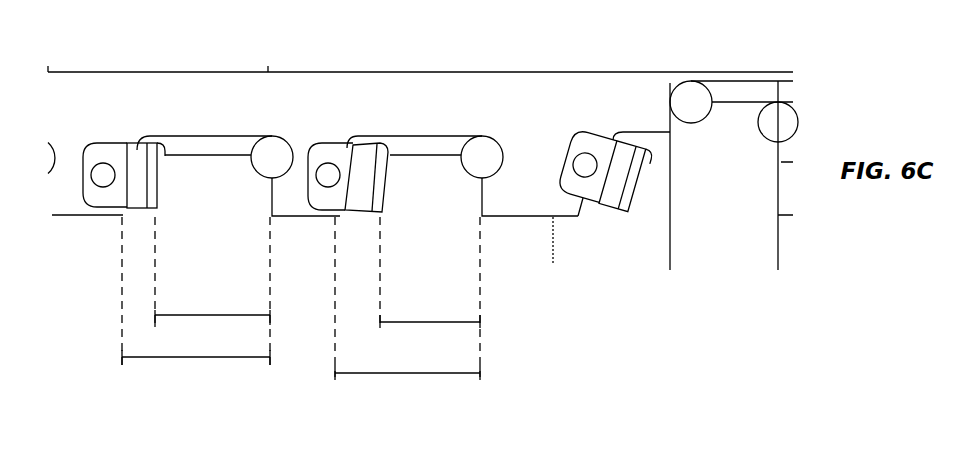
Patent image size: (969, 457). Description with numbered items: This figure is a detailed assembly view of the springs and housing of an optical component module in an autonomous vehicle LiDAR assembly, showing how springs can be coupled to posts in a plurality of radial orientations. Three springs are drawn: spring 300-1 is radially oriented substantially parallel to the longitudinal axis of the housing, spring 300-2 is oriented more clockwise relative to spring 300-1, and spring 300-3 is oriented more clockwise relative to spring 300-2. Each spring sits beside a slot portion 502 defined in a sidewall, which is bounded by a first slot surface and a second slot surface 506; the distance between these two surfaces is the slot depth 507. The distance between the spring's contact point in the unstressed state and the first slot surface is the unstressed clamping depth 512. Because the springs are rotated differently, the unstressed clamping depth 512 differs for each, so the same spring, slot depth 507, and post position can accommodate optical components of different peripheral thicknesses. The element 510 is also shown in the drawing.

The spring 300-1 is at (118, 153).
The spring 300-2 is at (333, 155).
The spring 300-3 is at (600, 150).
The slot portion 502 is at (215, 185).
The second slot surface 506 is at (482, 200).
The rail 510 is at (516, 122).
The unstressed clamping depth 512 is at (162, 317).
The slot depth 507 is at (408, 393).